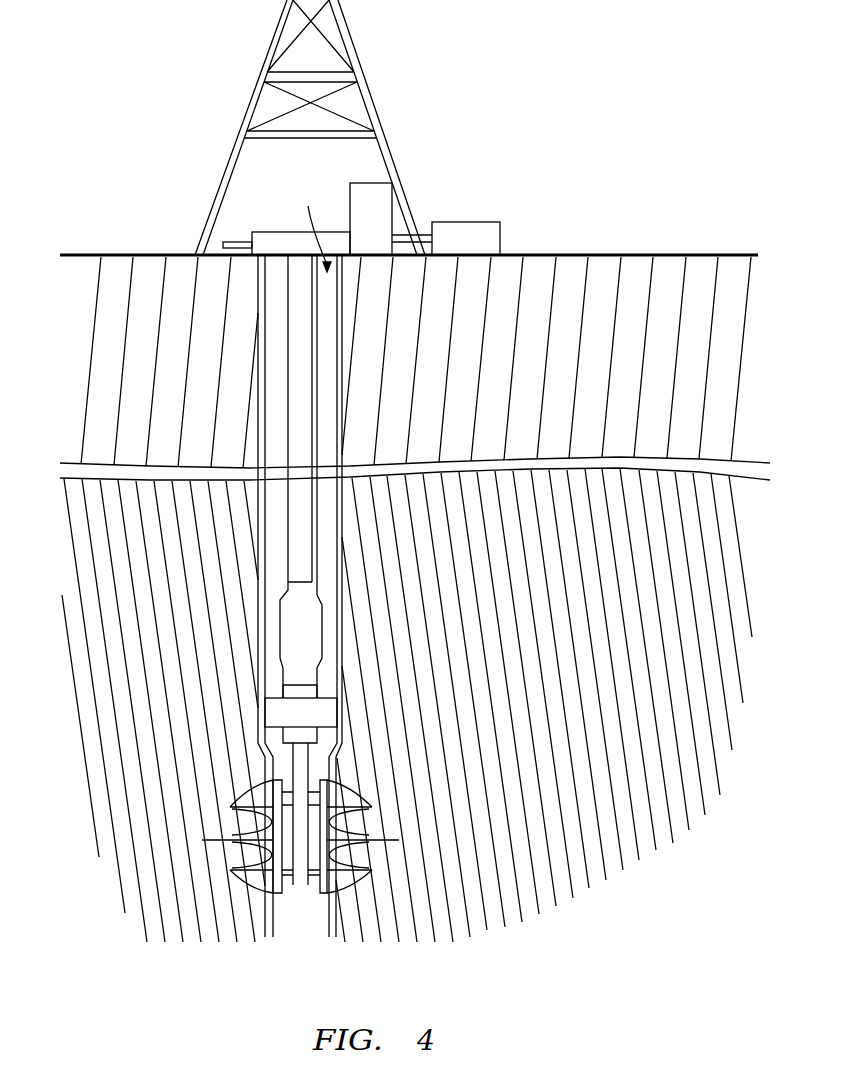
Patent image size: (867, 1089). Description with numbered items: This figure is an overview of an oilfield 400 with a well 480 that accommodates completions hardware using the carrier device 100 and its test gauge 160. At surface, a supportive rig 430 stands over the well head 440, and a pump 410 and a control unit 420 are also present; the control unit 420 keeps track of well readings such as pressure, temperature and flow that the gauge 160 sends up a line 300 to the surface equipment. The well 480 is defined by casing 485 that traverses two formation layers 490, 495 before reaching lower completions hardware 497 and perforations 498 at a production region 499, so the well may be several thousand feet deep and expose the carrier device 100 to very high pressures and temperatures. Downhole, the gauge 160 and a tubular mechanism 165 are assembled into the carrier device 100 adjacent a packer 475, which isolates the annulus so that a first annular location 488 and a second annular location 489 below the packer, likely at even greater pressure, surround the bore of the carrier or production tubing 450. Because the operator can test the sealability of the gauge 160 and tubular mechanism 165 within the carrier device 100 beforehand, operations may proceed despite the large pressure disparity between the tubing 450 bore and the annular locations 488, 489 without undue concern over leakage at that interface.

The carrier device 100 is at (271, 673).
The test gauge 160 is at (323, 615).
The tubular mechanism 165 is at (290, 622).
The line 300 is at (318, 402).
The oilfield 400 is at (640, 255).
The pump 410 is at (472, 227).
The control unit 420 is at (386, 196).
The supportive rig 430 is at (371, 91).
The well head 440 is at (283, 242).
The production tubing 450 is at (295, 339).
The packer 475 is at (332, 713).
The well 480 is at (311, 226).
The casing 485 is at (258, 422).
The annular location 488 is at (328, 682).
The second annular location 489 is at (270, 739).
The formation layer 490 is at (162, 369).
The formation layer 495 is at (598, 634).
The lower completions hardware 497 is at (262, 882).
The perforations 498 is at (240, 838).
The production region 499 is at (390, 797).